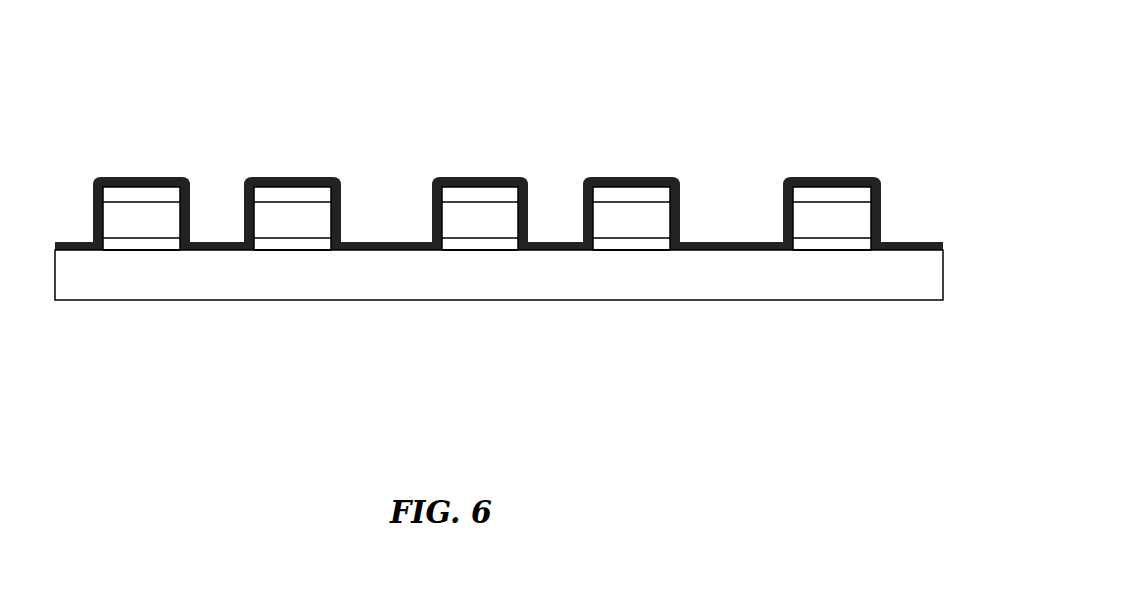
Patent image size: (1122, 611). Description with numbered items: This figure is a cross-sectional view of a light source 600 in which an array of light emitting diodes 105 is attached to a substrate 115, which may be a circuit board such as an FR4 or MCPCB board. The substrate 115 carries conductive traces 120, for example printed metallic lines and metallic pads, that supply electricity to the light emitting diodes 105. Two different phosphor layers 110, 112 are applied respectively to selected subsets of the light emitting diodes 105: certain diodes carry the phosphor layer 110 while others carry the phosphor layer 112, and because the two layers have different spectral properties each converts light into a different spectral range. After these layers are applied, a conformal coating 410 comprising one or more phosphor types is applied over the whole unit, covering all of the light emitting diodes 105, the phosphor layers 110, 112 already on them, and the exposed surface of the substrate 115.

The light source 600 is at (499, 216).
The conformal coating 410 is at (79, 243).
The phosphor layer 110 is at (130, 188).
The phosphor layer 112 is at (289, 188).
The light emitting diodes 105 is at (123, 231).
The substrate 115 is at (230, 291).
The conductive traces 120 is at (152, 253).